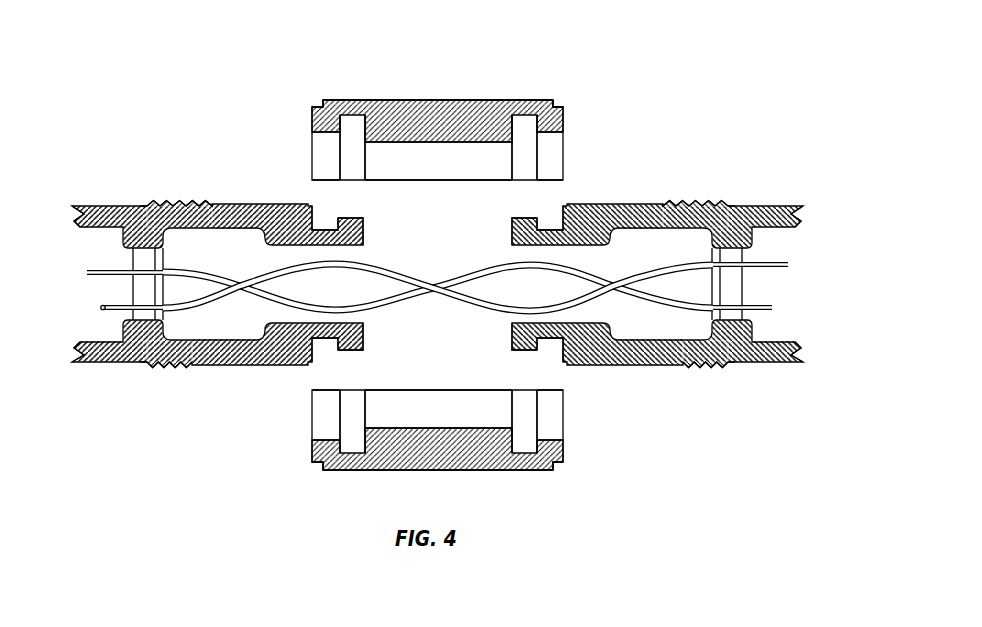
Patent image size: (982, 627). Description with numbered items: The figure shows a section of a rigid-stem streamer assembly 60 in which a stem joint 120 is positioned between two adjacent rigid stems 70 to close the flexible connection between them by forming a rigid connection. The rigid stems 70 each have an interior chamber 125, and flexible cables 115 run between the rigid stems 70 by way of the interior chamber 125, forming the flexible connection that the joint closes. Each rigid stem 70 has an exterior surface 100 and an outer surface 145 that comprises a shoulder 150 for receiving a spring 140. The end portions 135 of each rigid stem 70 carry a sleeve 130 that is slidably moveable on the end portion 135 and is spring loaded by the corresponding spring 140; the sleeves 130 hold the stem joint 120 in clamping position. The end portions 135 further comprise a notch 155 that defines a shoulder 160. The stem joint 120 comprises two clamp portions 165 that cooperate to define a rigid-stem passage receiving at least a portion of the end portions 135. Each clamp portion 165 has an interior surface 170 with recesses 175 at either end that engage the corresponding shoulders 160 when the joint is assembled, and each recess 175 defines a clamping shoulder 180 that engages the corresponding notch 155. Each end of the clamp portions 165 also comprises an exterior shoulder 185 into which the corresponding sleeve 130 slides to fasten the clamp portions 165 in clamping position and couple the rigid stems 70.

The rigid-stem streamer assembly 60 is at (702, 104).
The rigid stem 70 is at (115, 200).
The exterior surface 100 is at (364, 338).
The flexible cables 115 is at (490, 272).
The stem joint 120 is at (447, 72).
The interior chamber 125 is at (440, 391).
The sleeve 130 is at (270, 205).
The end portion 135 is at (205, 199).
The spring 140 is at (173, 206).
The outer surface 145 is at (90, 206).
The shoulder 150 is at (148, 206).
The notch 155 is at (321, 229).
The shoulder 160 is at (360, 217).
The clamp portion 165 is at (397, 99).
The interior surface 170 is at (433, 170).
The recess 175 is at (348, 119).
The clamping shoulder 180 is at (326, 156).
The exterior shoulder 185 is at (320, 105).